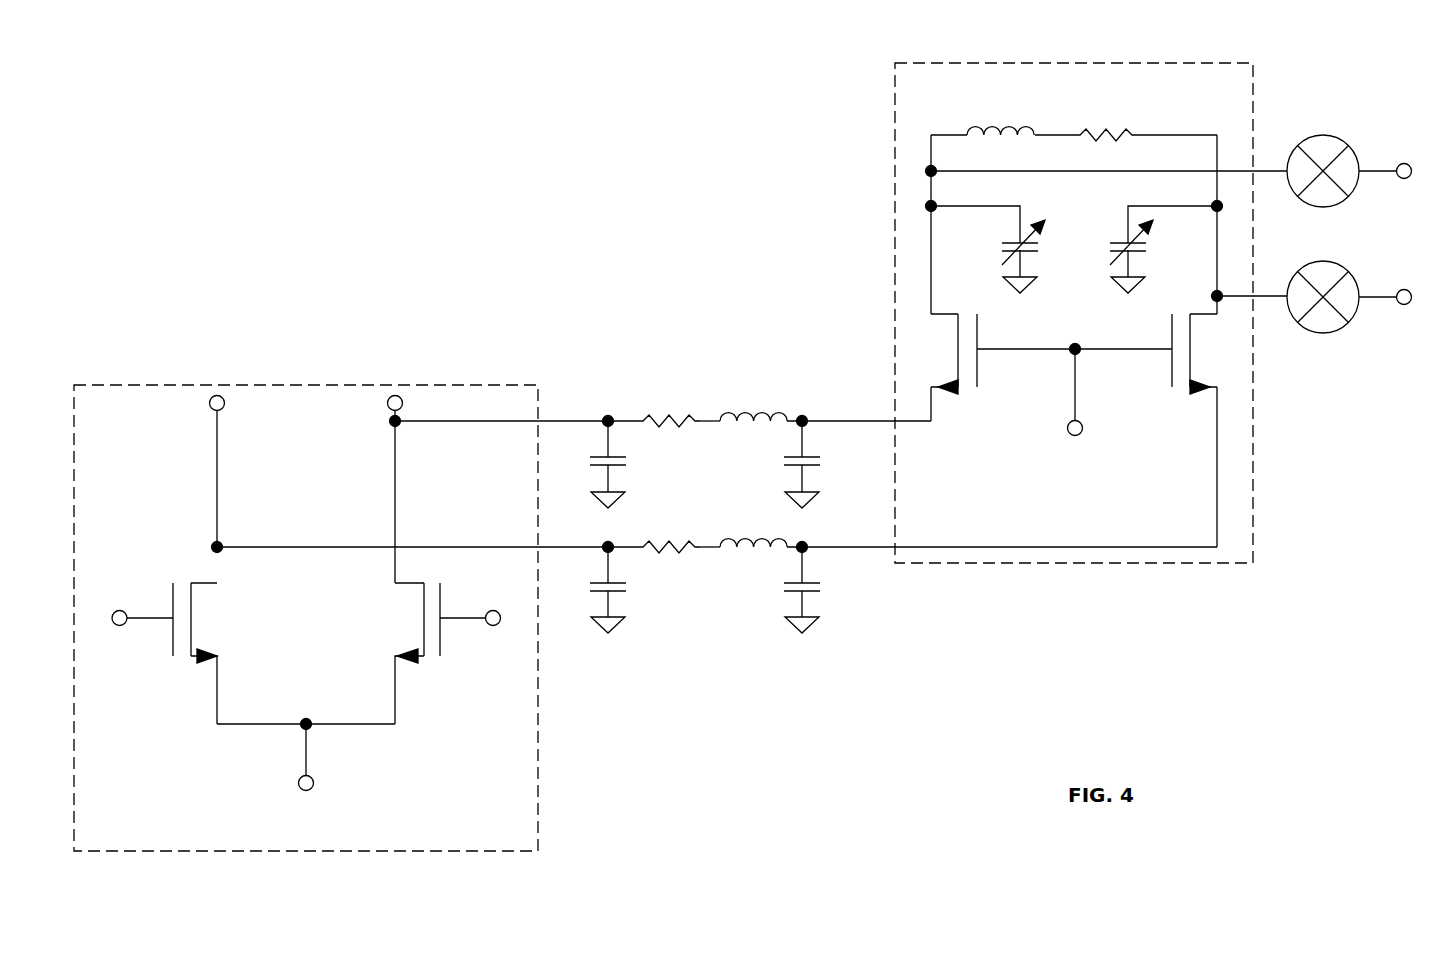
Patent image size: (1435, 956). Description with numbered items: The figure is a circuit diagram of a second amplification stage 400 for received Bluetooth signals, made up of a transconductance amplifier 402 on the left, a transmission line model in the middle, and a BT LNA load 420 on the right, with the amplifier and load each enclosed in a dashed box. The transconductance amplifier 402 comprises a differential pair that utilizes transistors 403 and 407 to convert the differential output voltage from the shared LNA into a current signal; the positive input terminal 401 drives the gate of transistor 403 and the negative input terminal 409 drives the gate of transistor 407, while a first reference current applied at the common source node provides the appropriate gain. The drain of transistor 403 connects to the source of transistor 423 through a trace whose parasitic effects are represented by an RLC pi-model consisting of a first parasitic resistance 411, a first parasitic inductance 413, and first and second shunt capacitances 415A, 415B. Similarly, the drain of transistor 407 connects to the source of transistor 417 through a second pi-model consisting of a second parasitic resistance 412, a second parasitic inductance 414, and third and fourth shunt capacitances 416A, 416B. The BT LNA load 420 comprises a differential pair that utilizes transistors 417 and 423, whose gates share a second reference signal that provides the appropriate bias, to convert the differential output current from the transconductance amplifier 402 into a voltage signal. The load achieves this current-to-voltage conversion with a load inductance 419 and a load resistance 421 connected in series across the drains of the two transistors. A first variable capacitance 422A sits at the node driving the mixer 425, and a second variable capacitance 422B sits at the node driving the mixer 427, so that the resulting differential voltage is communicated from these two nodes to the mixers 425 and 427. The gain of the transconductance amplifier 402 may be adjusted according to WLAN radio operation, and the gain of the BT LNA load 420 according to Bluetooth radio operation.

The second amplification stage 400 is at (342, 266).
The first input terminal (V+) 401 is at (119, 610).
The transconductance amplifier 402 is at (380, 385).
The transistor 403 is at (197, 581).
The transistor 407 is at (410, 585).
The second input terminal (V-) 409 is at (493, 626).
The parasitic resistance R1 411 is at (690, 548).
The parasitic resistance R2 412 is at (690, 423).
The parasitic inductance L1 413 is at (733, 550).
The parasitic inductance L2 414 is at (733, 425).
The parasitic capacitance C1 415A is at (622, 591).
The parasitic capacitance C2 415B is at (817, 591).
The parasitic capacitance C3 416A is at (622, 465).
The parasitic capacitance C4 416B is at (817, 465).
The transistor 417 is at (947, 312).
The inductance L3 419 is at (992, 126).
The BT LNA load 420 is at (1080, 62).
The resistance R3 421 is at (1112, 126).
The variable capacitance C5 422A is at (1032, 255).
The variable capacitance C6 422B is at (1115, 240).
The transistor 423 is at (1198, 312).
The mixer 425 is at (1310, 133).
The mixer 427 is at (1317, 333).